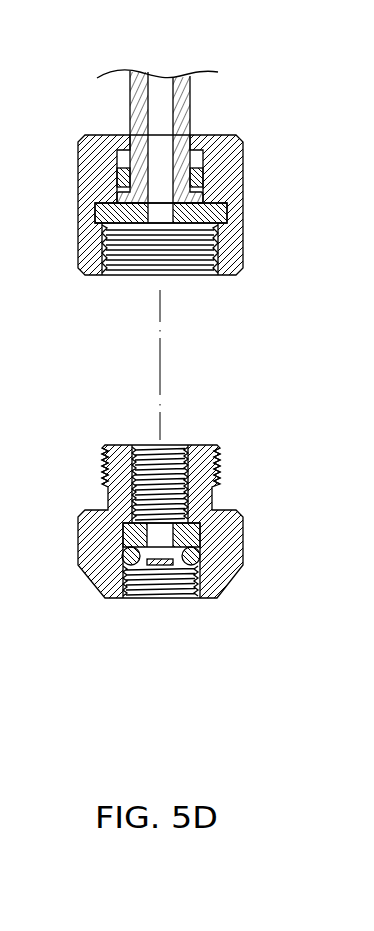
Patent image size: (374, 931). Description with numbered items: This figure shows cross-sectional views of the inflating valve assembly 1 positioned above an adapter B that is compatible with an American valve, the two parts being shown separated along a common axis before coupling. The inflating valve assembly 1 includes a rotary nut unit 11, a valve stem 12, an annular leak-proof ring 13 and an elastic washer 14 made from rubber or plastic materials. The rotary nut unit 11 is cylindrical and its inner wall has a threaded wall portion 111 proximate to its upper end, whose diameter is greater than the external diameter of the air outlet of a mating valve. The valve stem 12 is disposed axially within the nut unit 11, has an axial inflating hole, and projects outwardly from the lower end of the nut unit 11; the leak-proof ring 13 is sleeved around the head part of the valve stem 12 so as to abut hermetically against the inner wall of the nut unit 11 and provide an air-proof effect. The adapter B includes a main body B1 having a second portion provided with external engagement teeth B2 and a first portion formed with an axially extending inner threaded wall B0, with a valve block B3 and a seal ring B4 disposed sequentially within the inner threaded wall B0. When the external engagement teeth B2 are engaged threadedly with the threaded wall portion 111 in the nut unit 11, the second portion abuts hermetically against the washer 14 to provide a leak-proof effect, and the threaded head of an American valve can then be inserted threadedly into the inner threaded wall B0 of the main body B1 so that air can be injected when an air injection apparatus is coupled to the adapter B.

The inflating valve assembly 1 is at (175, 199).
The rotary nut unit 11 is at (243, 180).
The threaded wall portion 111 is at (129, 257).
The valve stem 12 is at (191, 106).
The annular leak-proof ring 13 is at (118, 182).
The elastic washer 14 is at (243, 215).
The adapter B is at (172, 549).
The inner threaded wall B0 is at (165, 580).
The main body B1 is at (100, 565).
The external engagement teeth B2 is at (102, 462).
The valve block B3 is at (200, 527).
The sealing ring of adapter B4 is at (193, 550).